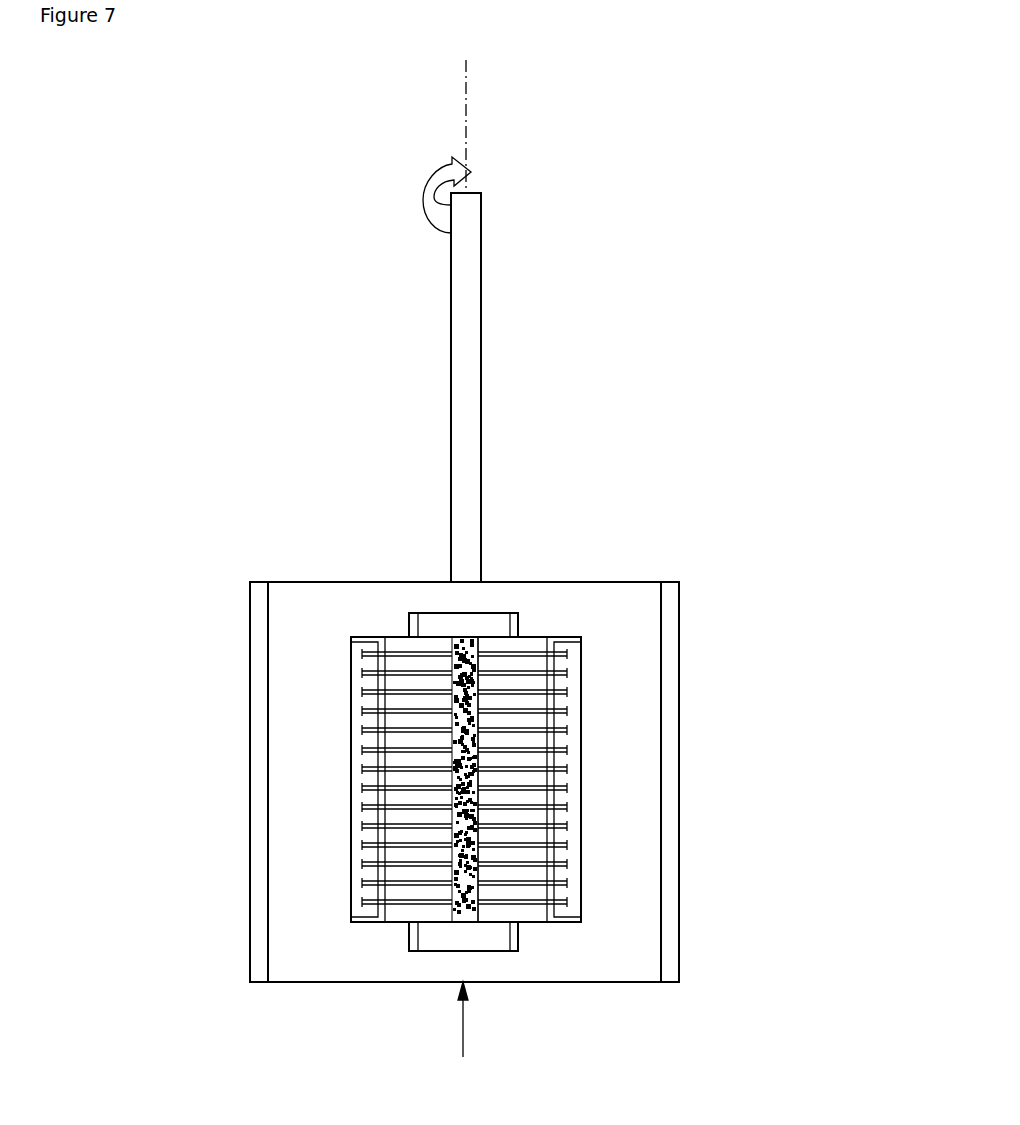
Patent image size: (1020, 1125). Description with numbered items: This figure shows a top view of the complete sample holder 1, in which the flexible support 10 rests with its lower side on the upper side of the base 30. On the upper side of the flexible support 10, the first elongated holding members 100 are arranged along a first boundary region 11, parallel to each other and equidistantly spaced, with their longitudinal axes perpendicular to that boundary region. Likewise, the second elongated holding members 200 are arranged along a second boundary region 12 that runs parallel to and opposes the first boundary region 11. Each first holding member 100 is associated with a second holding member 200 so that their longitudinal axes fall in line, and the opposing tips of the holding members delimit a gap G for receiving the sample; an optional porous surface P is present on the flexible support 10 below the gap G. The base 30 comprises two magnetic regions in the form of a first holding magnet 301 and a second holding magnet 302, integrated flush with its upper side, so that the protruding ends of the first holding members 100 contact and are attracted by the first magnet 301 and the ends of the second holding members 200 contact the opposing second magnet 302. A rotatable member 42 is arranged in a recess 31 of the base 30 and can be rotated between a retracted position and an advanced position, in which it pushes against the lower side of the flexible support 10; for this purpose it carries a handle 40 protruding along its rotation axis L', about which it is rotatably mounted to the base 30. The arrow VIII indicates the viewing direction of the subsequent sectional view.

The sample holder 1 is at (262, 493).
The rotation axis L' is at (526, 146).
The handle 40 is at (481, 297).
The base 30 is at (728, 745).
The rotatable member 42 is at (478, 935).
The recess 31 is at (417, 932).
The flexible support 10 is at (576, 810).
The first holding magnet 301 is at (355, 702).
The second holding magnet 302 is at (573, 698).
The first boundary region 11 is at (383, 913).
The second boundary region 12 is at (559, 923).
The first elongated holding members 100 is at (412, 652).
The second elongated holding members 200 is at (533, 648).
The porous surface P is at (462, 640).
The gap G is at (478, 698).
The section line VIII is at (458, 1040).